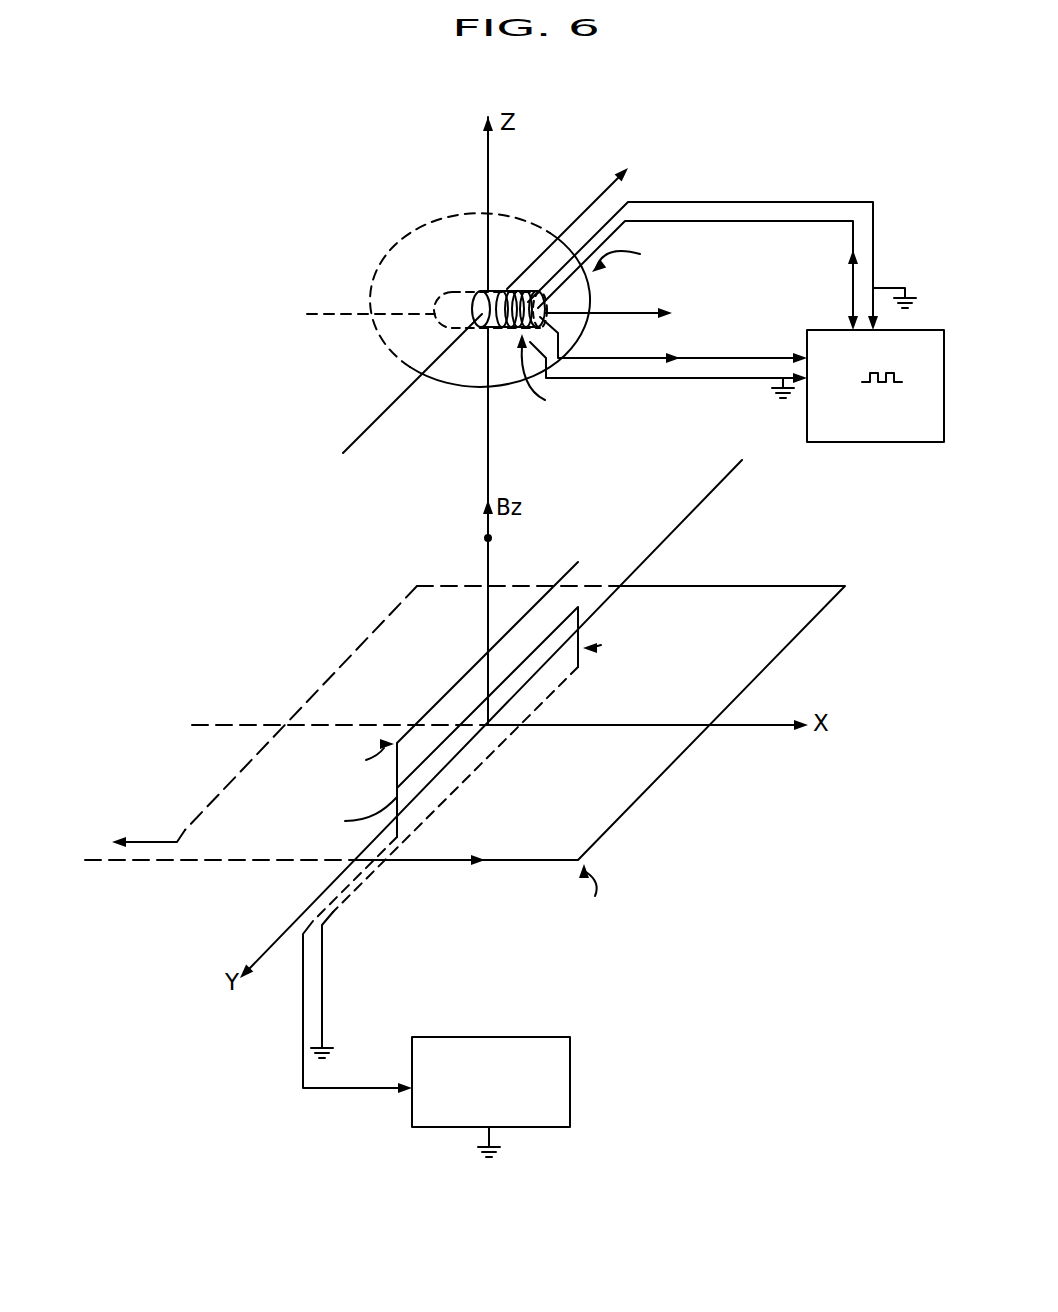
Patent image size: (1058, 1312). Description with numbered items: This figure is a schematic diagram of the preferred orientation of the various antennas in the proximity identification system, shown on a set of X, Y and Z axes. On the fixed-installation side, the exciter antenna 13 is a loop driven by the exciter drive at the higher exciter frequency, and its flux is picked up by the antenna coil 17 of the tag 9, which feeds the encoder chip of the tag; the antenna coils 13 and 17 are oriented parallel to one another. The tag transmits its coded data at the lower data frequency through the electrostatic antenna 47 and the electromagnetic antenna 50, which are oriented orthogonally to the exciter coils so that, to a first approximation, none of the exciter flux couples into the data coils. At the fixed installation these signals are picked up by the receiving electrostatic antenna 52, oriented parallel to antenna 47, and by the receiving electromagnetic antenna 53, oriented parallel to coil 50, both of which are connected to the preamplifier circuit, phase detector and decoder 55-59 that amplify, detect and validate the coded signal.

The tag 9 is at (944, 332).
The exciter antenna 13 is at (784, 648).
The antenna coil 17 is at (395, 345).
The electrostatic antenna 47 is at (378, 416).
The electromagnetic antenna 50 is at (506, 332).
The receiving electrostatic antenna 52 is at (442, 700).
The receiving electromagnetic antenna 53 is at (540, 699).
The preamplifier circuit, phase detector and decoder 55-59 is at (483, 1037).